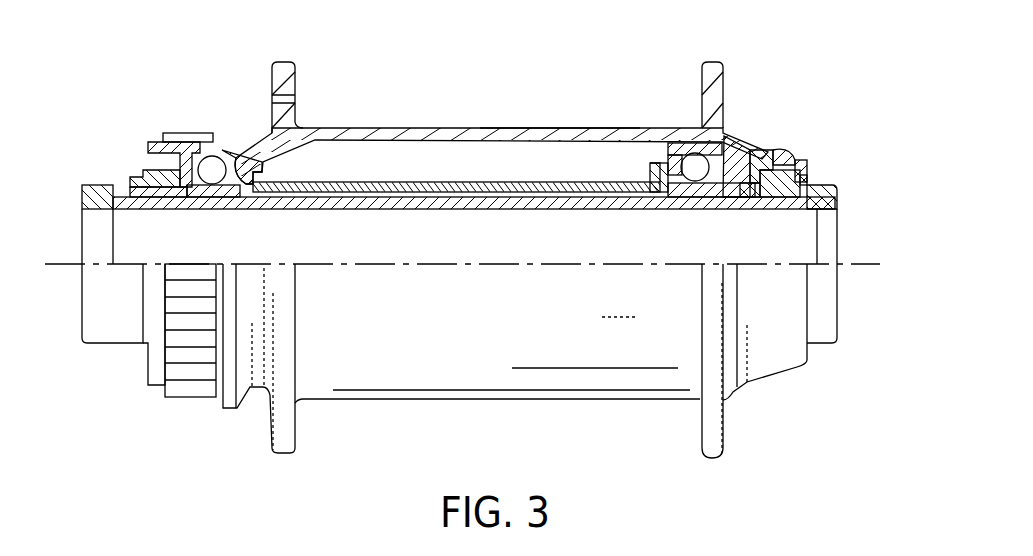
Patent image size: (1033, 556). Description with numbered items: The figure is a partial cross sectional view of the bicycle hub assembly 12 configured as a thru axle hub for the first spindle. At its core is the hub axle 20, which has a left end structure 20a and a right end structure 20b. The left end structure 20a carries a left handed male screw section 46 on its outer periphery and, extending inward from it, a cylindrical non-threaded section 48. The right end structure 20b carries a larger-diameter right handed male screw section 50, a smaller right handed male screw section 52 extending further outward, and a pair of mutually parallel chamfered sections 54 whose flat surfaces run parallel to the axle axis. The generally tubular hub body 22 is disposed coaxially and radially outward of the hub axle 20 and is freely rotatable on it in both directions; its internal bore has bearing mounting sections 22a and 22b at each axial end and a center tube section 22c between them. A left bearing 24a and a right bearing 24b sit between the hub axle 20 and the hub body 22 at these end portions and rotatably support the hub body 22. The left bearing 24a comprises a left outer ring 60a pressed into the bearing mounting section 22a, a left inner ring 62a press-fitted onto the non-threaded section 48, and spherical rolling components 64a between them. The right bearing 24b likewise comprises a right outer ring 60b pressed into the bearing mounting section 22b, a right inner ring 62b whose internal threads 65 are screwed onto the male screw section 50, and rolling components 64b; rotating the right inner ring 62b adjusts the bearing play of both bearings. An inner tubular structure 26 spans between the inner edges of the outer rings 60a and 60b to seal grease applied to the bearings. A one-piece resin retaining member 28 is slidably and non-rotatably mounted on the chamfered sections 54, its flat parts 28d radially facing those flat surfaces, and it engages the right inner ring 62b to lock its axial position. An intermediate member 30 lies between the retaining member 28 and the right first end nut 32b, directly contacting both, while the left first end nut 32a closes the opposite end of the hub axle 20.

The bicycle hub assembly 12 is at (634, 40).
The hub axle 20 is at (510, 211).
The left end structure 20a is at (180, 222).
The right end structure 20b is at (667, 223).
The hub body 22 is at (403, 126).
The bearing mounting section 22a is at (256, 137).
The bearing mounting section 22b is at (668, 148).
The center tube section 22c is at (555, 126).
The left bearing 24a is at (176, 159).
The right bearing 24b is at (735, 158).
The inner tubular structure 26 is at (487, 180).
The retaining member 28 is at (767, 150).
The flat parts 28d is at (768, 192).
The intermediate member 30 is at (800, 160).
The left first end nut 32a is at (108, 184).
The right first end nut 32b is at (827, 177).
The male screw section 46 is at (133, 187).
The non-threaded section 48 is at (190, 152).
The male screw section 50 is at (720, 145).
The male screw section 52 is at (806, 158).
The chamfered sections 54 is at (772, 162).
The left outer ring 60a is at (235, 158).
The right outer ring 60b is at (683, 162).
The left inner ring 62a is at (198, 208).
The right inner ring 62b is at (692, 192).
The rolling components 64a is at (214, 158).
The rolling components 64b is at (660, 205).
The internal threads 65 is at (733, 192).